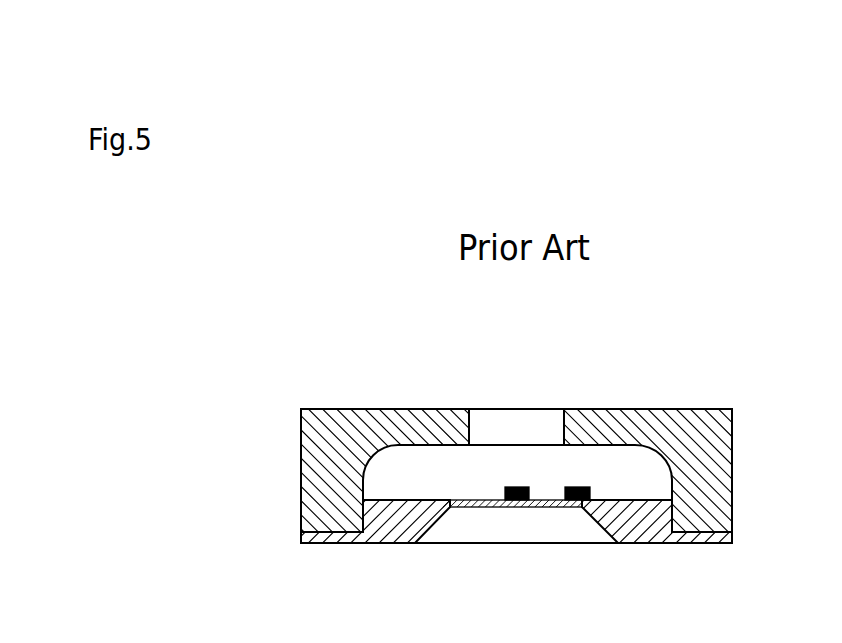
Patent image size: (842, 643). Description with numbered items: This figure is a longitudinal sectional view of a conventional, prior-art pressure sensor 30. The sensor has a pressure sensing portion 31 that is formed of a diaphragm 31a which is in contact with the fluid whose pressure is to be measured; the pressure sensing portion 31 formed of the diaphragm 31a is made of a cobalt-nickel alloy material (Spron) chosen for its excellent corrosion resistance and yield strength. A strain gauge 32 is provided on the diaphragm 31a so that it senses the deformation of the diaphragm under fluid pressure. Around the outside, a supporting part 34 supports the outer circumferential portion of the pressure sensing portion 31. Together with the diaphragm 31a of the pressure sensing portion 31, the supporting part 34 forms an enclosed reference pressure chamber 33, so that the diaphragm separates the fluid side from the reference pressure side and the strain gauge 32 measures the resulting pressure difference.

The pressure sensor 30 is at (654, 410).
The pressure sensing portion 31 is at (393, 523).
The diaphragm 31a is at (495, 505).
The strain gauge 32 is at (516, 487).
The reference pressure chamber 33 is at (442, 475).
The supporting part 34 is at (348, 452).